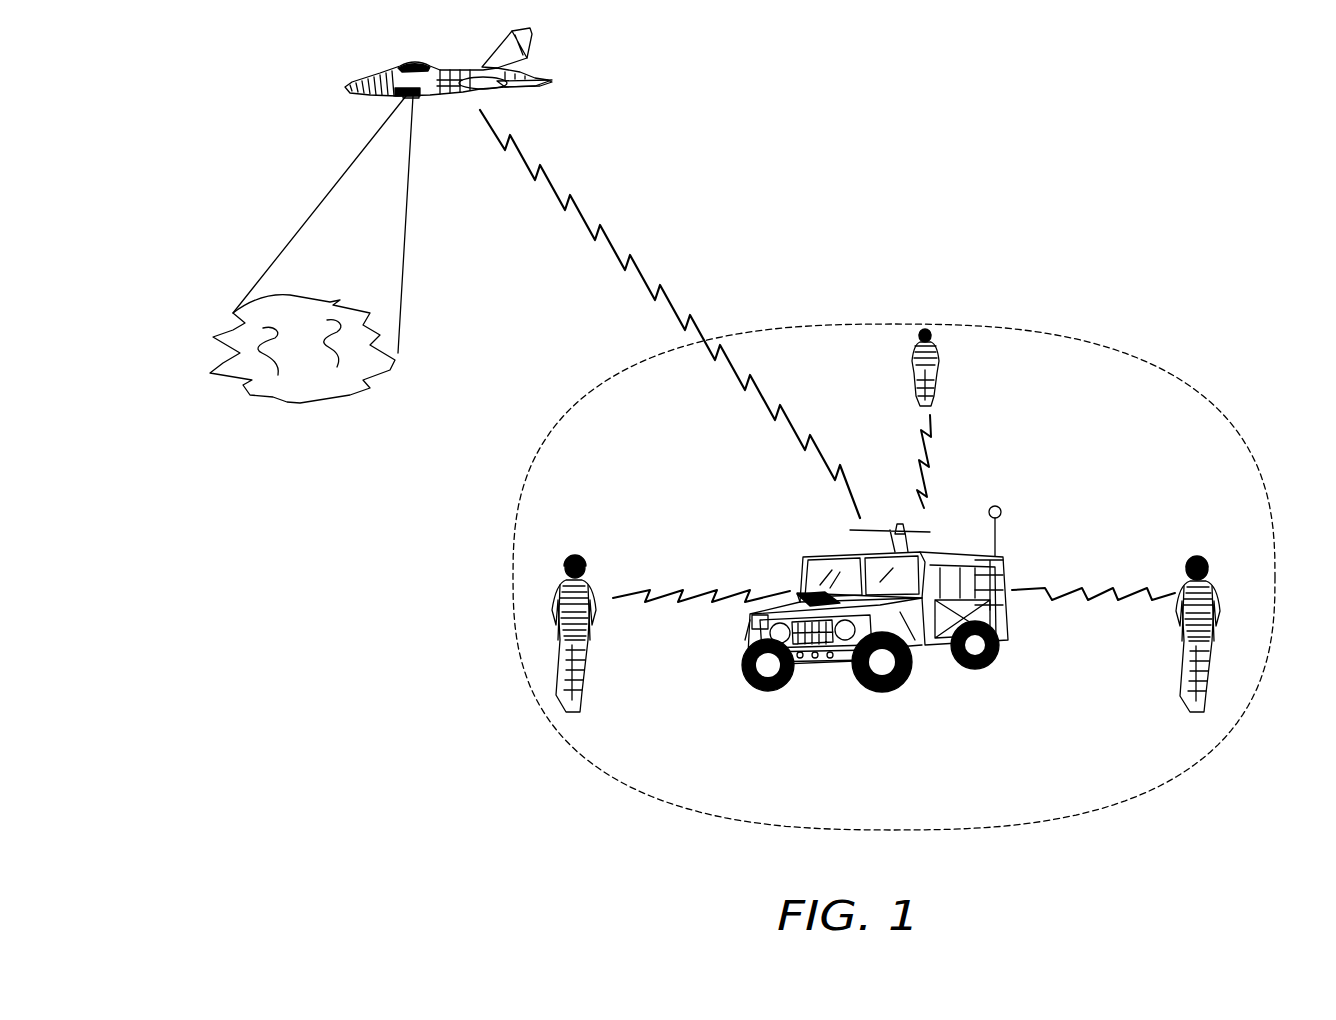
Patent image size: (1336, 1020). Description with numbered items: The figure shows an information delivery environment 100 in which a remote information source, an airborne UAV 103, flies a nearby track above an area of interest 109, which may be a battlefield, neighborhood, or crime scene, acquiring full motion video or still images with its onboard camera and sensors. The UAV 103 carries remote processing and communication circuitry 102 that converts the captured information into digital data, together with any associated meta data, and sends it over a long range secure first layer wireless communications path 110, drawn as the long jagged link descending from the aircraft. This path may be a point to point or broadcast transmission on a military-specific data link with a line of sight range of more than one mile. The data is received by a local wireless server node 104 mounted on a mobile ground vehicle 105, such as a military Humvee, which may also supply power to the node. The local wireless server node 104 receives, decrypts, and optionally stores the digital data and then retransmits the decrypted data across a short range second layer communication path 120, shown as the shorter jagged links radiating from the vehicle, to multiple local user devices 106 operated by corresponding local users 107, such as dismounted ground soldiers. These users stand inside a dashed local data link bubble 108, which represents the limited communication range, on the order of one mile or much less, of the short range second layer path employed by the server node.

The information delivery environment 100 is at (1110, 120).
The remote processing and communication circuitry 102 is at (406, 62).
The UAV 103 is at (352, 98).
The local wireless server node 104 is at (1003, 600).
The mobile ground vehicle 105 is at (750, 626).
The local user devices 106 is at (555, 675).
The local users 107 is at (579, 561).
The local data link bubble 108 is at (600, 389).
The area of interest 109 is at (290, 404).
The long range secure first layer wireless communications path 110 is at (556, 190).
The short range second layer communication path 120 is at (697, 584).